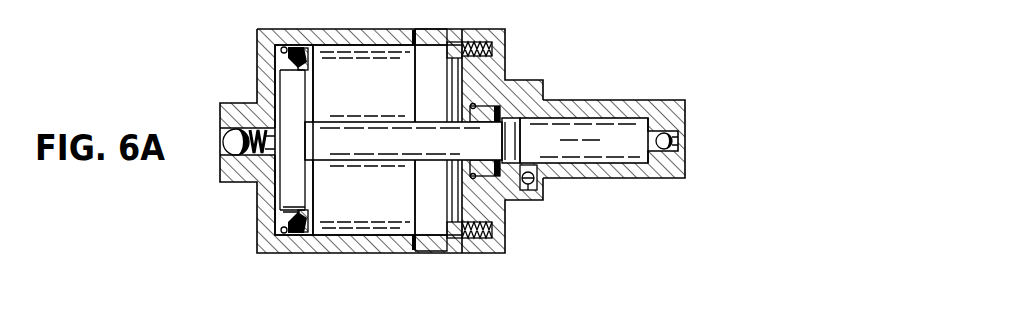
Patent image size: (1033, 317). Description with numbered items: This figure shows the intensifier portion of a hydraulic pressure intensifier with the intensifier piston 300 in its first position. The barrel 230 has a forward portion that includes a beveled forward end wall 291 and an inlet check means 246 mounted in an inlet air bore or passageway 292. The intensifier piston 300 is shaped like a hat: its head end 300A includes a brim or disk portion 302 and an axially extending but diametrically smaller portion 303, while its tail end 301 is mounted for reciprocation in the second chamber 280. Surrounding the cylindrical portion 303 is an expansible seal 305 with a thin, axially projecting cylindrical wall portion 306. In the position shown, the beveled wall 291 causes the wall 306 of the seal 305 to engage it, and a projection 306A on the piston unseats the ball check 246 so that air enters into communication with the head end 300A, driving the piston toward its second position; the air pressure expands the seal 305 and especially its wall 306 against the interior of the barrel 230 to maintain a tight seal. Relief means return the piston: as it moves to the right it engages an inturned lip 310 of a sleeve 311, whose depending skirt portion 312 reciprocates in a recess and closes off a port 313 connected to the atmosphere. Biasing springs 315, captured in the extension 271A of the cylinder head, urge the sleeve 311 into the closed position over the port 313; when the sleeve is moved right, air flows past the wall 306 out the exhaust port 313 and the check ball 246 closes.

The barrel 230 is at (383, 38).
The extension of the cylinder head 271A is at (513, 97).
The biasing springs 315 is at (490, 44).
The inturned lip 310 is at (456, 44).
The port 313 is at (428, 253).
The sleeve 311 is at (428, 40).
The skirt portion 312 is at (414, 34).
The intensifier piston 300 is at (305, 76).
The head end 300A is at (310, 85).
The tail end 301 is at (488, 142).
The second chamber 280 is at (608, 126).
The axially extending portion 303 is at (300, 178).
The brim or disk portion 302 is at (308, 208).
The expansible seal 305 is at (303, 236).
The cylindrical wall portion 306 is at (300, 46).
The beveled forward end wall 291 is at (284, 48).
The projection 306A is at (262, 128).
The inlet air bore or passageway 292 is at (222, 130).
The inlet check means 246 is at (230, 142).